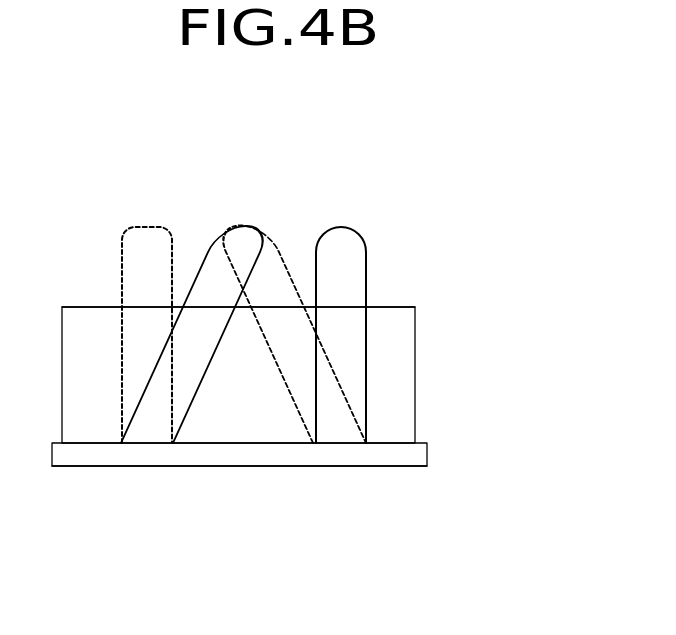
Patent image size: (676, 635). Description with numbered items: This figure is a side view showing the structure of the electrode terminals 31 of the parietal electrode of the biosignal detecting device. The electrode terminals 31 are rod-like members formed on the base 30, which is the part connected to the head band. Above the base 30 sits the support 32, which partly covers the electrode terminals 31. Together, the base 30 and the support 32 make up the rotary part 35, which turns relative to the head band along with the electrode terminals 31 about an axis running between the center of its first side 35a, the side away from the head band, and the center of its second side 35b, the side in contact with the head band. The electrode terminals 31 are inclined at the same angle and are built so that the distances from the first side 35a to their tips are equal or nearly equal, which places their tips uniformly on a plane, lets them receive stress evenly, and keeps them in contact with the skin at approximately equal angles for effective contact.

The electrode terminals 31 is at (150, 242).
The support 32 is at (405, 379).
The base 30 is at (417, 455).
The rotary part 35 is at (512, 355).
The first side 35a is at (382, 307).
The second side 35b is at (382, 466).